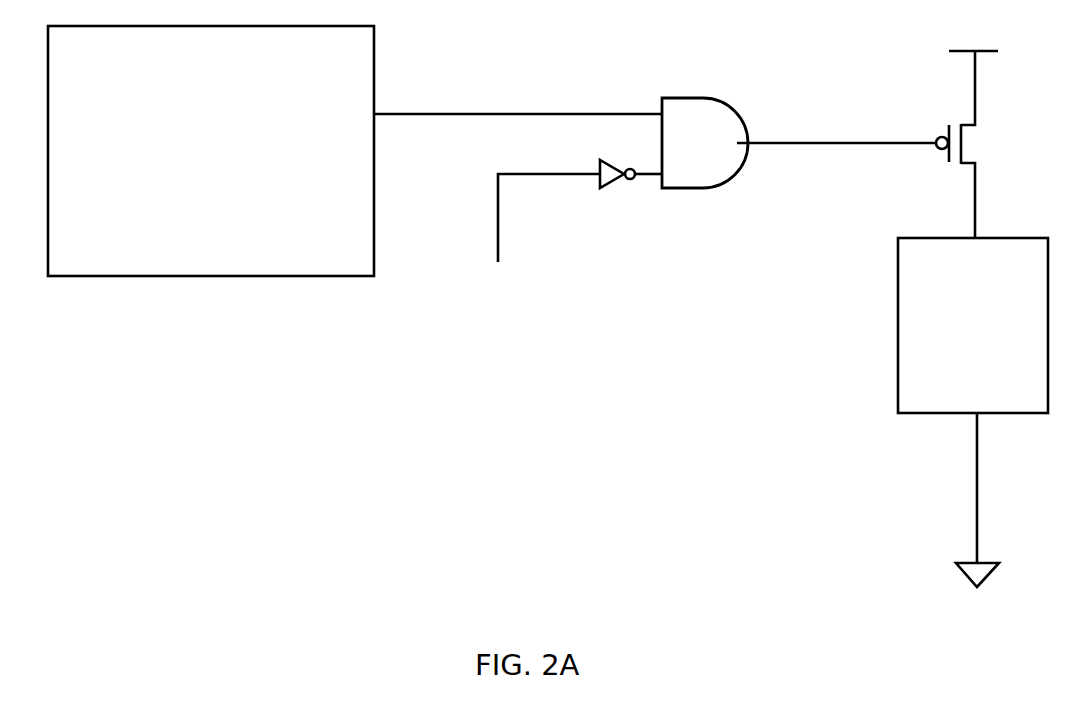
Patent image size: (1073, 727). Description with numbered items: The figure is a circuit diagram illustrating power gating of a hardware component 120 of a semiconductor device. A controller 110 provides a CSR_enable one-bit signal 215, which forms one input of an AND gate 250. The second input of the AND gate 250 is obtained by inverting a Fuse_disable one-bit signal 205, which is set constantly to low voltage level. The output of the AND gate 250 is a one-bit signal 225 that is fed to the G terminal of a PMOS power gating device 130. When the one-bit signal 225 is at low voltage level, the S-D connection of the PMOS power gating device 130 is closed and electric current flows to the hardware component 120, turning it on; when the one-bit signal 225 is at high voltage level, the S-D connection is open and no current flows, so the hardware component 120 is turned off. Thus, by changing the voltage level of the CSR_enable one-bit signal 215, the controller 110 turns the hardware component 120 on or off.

The controller 110 is at (350, 267).
The hardware component 120 is at (1036, 406).
The PMOS power gating device 130 is at (963, 149).
The Fuse_disable one-bit signal 205 is at (547, 237).
The CSR_enable one-bit signal 215 is at (518, 95).
The one-bit signal 225 is at (836, 122).
The AND gate 250 is at (724, 148).